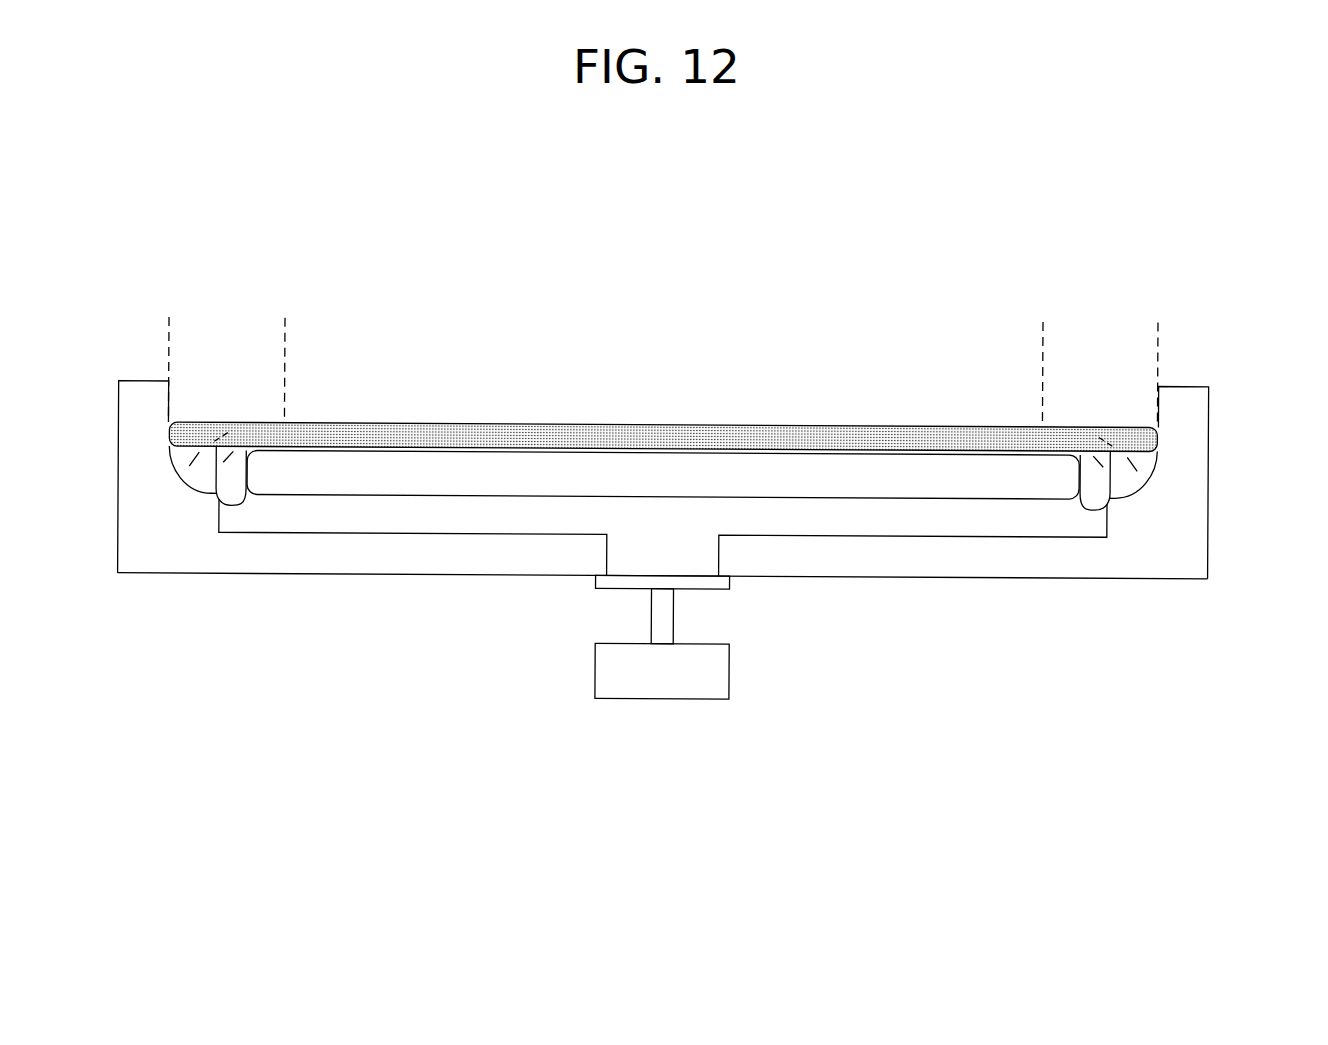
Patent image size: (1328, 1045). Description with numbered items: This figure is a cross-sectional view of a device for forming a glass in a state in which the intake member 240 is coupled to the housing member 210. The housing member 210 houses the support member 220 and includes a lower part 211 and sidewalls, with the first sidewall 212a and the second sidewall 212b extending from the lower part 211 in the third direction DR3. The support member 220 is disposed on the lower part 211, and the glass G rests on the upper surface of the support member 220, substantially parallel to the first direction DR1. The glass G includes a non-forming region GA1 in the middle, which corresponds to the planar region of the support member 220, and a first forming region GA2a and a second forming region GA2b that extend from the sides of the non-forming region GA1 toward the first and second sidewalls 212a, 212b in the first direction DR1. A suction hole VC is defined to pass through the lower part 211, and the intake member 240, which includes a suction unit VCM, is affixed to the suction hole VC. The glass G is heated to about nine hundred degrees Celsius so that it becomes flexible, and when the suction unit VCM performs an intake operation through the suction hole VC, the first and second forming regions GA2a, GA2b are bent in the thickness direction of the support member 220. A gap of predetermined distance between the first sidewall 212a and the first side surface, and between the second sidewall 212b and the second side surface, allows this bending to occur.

The housing member 210 is at (1220, 466).
The lower part 211 is at (335, 574).
The first sidewall 212a is at (205, 495).
The second sidewall 212b is at (1123, 497).
The support member 220 is at (437, 481).
The intake member 240 is at (735, 665).
The glass G is at (757, 427).
The suction hole VC is at (611, 556).
The suction unit VCM is at (663, 688).
The non-forming region GA1 is at (1043, 322).
The first forming region GA2a is at (285, 322).
The second forming region GA2b is at (1158, 322).
The first direction DR1 is at (117, 813).
The third direction DR3 is at (117, 813).